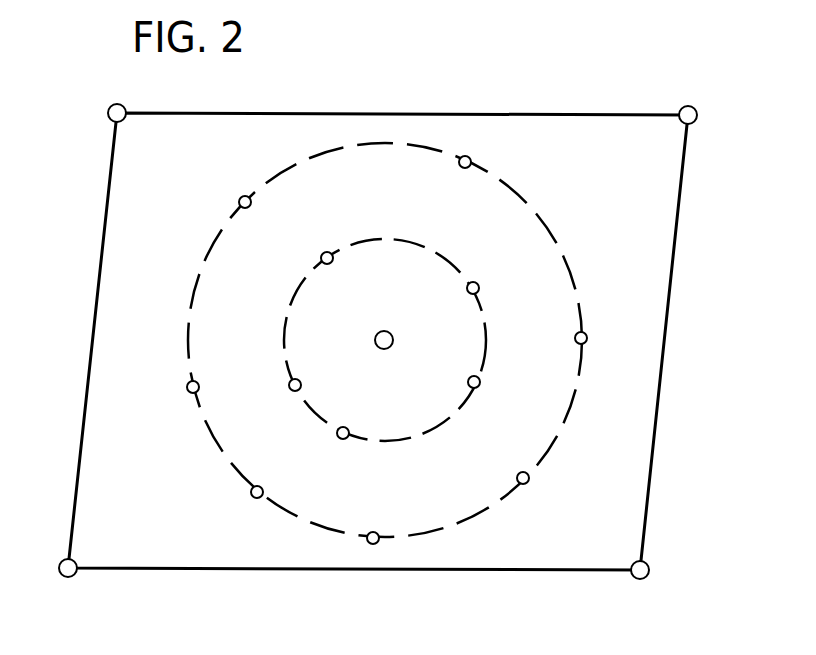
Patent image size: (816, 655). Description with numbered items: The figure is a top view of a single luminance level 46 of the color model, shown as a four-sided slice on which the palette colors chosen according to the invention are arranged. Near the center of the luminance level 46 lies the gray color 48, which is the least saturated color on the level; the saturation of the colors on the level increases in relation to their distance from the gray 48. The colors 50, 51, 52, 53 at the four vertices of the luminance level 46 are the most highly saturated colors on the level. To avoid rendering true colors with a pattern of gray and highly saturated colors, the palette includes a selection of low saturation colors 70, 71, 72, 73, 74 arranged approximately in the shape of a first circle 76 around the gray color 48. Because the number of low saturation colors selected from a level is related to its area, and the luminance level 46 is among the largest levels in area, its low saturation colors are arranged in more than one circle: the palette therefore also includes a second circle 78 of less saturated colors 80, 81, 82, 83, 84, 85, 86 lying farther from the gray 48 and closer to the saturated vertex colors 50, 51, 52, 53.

The luminance level 46 is at (678, 220).
The gray color 48 is at (389, 331).
The vertex color 50 is at (60, 570).
The vertex color 51 is at (109, 106).
The vertex color 52 is at (696, 109).
The vertex color 53 is at (648, 576).
The low saturation color 70 is at (289, 387).
The low saturation color 71 is at (337, 435).
The low saturation color 72 is at (479, 387).
The low saturation color 73 is at (478, 283).
The low saturation color 74 is at (322, 255).
The first circle 76 is at (297, 290).
The second circle 78 is at (213, 238).
The less saturated color 80 is at (262, 490).
The less saturated color 81 is at (377, 532).
The less saturated color 82 is at (528, 483).
The less saturated color 83 is at (575, 338).
The less saturated color 84 is at (470, 158).
The less saturated color 85 is at (239, 199).
The less saturated color 86 is at (193, 393).